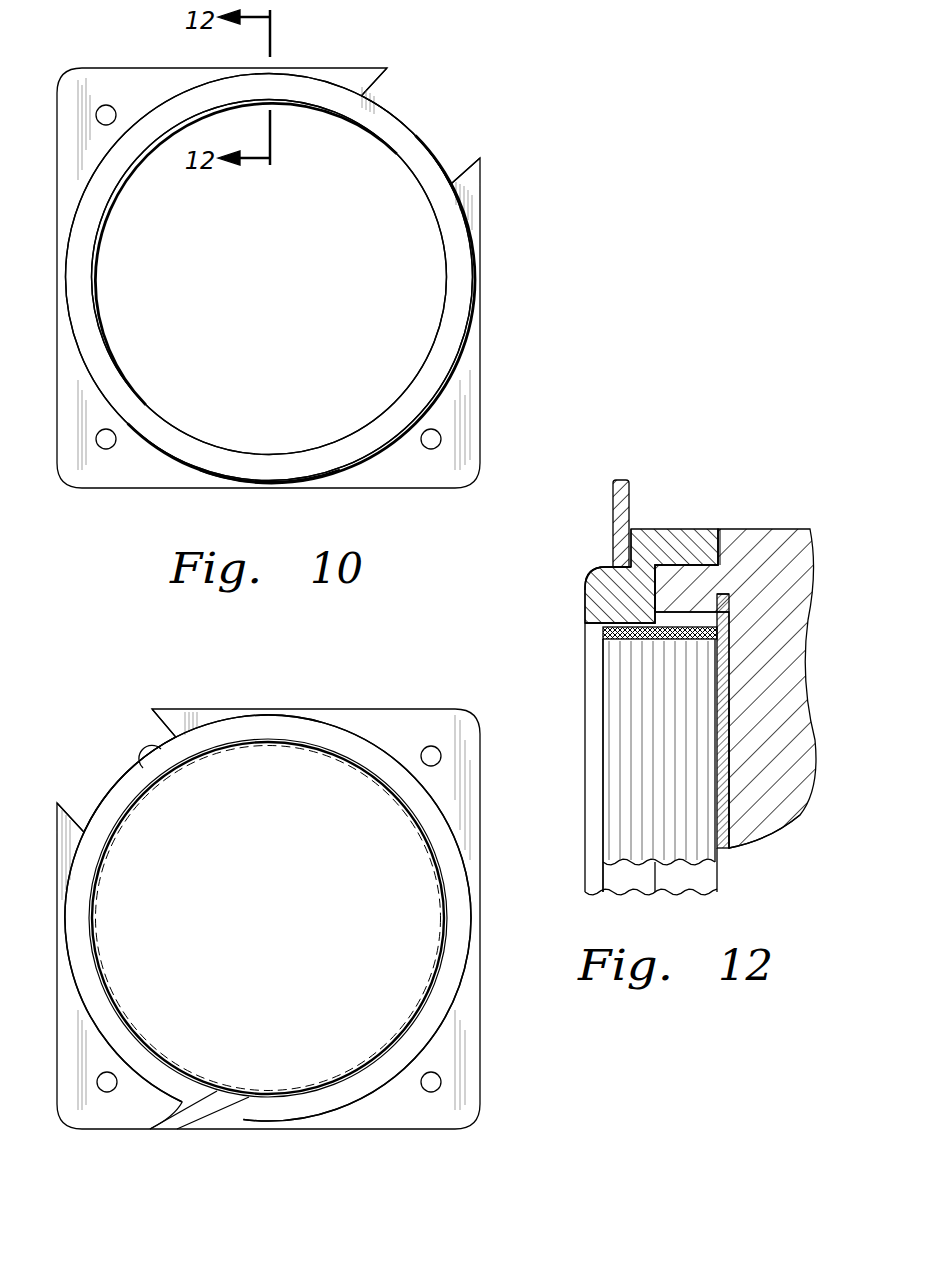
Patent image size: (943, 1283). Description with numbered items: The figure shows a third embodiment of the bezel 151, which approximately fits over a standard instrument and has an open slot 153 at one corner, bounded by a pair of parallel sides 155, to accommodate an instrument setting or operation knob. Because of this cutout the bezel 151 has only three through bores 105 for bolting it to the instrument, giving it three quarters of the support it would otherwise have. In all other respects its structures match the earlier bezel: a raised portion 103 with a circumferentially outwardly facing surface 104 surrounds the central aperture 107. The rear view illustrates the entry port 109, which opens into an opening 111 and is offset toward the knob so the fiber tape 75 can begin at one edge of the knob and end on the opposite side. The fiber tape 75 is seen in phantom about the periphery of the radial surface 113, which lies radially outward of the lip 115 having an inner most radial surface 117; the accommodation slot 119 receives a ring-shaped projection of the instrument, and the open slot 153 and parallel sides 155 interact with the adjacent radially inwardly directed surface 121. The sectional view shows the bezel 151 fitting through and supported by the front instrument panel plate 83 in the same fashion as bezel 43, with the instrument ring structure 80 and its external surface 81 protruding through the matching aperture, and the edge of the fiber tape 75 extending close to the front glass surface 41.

In FIG. 10, the bezel 151 is at (502, 350).
In FIG. 11, the bezel 151 is at (370, 697).
In FIG. 12, the bezel 151 is at (691, 514).
In FIG. 10, the open slot 153 is at (436, 122).
In FIG. 11, the open slot 153 is at (116, 765).
In FIG. 10, the parallel sides 155 is at (386, 75).
In FIG. 11, the parallel sides 155 is at (161, 725).
In FIG. 10, the raised portion 103 is at (448, 226).
In FIG. 12, the raised portion 103 is at (587, 617).
In FIG. 10, the circumferentially outwardly facing surface 104 is at (363, 459).
In FIG. 12, the circumferentially outwardly facing surface 104 is at (602, 567).
In FIG. 10, the through bores 105 is at (106, 105).
In FIG. 11, the through bores 105 is at (433, 746).
In FIG. 10, the central aperture 107 is at (408, 275).
In FIG. 11, the accommodation slot 119 is at (278, 730).
In FIG. 12, the accommodation slot 119 is at (718, 613).
In FIG. 11, the radially inwardly directed surface 121 is at (143, 767).
In FIG. 12, the radially inwardly directed surface 121 is at (658, 606).
In FIG. 11, the lip 115 is at (107, 975).
In FIG. 12, the lip 115 is at (603, 680).
In FIG. 12, the inner most radial surface 117 is at (594, 737).
In FIG. 11, the fiber tape 75 is at (150, 1032).
In FIG. 12, the fiber tape 75 is at (625, 787).
In FIG. 11, the opening 111 is at (234, 1095).
In FIG. 11, the entry port 109 is at (177, 1130).
In FIG. 12, the front instrument panel plate 83 is at (613, 498).
In FIG. 12, the bezel 43 is at (768, 529).
In FIG. 12, the front glass surface 41 is at (762, 755).
In FIG. 12, the external surface 81 is at (722, 548).
In FIG. 12, the ring structure 80 is at (706, 639).
In FIG. 12, the radial surface 113 is at (728, 700).